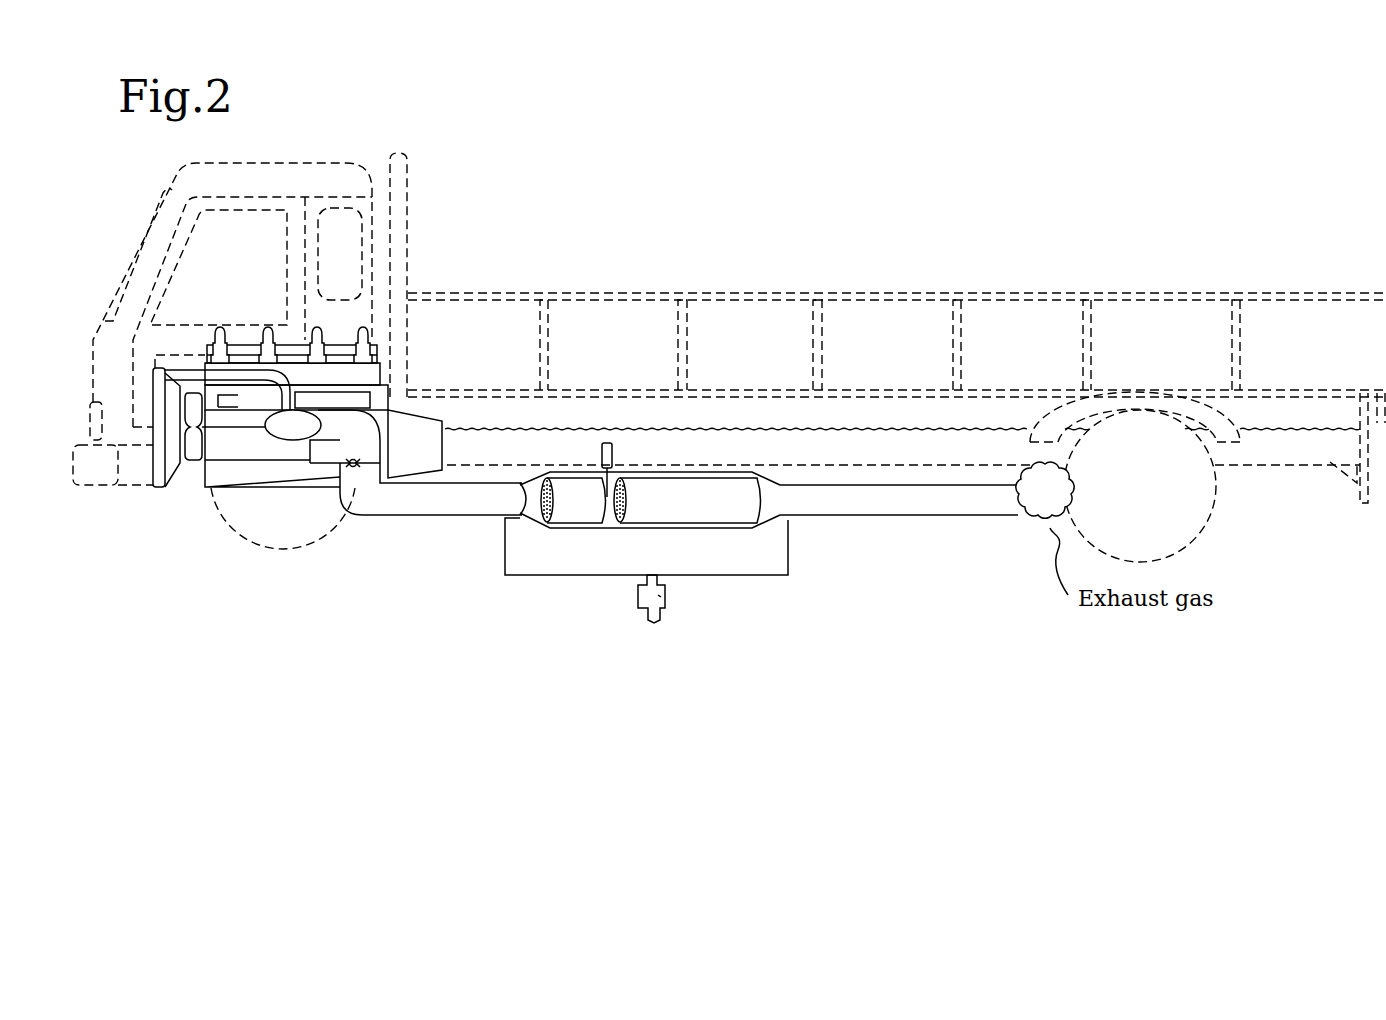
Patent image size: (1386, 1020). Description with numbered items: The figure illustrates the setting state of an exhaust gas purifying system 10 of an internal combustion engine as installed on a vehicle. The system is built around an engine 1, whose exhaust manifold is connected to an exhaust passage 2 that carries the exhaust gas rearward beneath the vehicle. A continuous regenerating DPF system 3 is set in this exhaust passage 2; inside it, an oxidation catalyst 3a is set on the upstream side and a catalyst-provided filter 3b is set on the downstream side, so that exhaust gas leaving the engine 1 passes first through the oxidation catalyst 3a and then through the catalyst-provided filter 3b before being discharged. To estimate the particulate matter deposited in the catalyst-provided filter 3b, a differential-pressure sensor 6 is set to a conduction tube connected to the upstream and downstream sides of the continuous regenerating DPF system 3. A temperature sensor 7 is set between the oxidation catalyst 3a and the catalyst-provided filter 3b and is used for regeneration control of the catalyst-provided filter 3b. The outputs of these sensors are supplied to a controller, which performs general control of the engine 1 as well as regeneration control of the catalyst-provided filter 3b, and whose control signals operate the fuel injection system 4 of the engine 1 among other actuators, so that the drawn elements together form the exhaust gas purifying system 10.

The engine 1 is at (255, 482).
The exhaust passage 2 is at (383, 517).
The continuous regenerating DPF system 3 is at (560, 530).
The oxidation catalyst 3a is at (585, 513).
The catalyst-provided filter 3b is at (728, 505).
The fuel injection system 4 is at (313, 320).
The differential-pressure sensor 6 is at (667, 600).
The temperature sensor 7 is at (613, 450).
The exhaust gas purifying system 10 is at (525, 599).